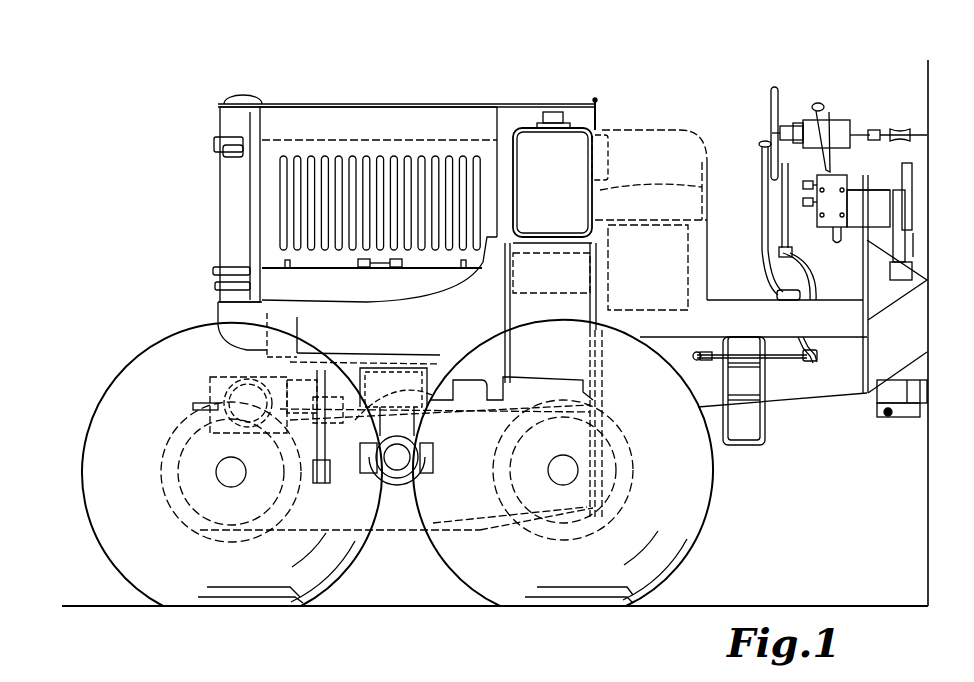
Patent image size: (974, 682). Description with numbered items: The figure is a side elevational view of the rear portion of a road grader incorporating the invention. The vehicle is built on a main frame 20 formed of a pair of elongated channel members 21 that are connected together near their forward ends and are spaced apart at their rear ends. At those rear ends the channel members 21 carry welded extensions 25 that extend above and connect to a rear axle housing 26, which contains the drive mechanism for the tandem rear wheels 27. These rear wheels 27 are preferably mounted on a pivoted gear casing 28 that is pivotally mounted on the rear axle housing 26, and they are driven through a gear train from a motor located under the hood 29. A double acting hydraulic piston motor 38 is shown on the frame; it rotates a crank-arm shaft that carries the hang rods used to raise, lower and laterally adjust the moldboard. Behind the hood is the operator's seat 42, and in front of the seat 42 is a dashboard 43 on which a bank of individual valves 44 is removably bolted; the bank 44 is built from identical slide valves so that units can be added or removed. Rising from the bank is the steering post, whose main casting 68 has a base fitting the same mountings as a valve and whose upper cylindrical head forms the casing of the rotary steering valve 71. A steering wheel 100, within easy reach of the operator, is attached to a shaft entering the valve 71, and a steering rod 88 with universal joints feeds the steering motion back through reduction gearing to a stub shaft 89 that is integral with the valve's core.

The main frame 20 is at (893, 352).
The channel members 21 is at (897, 280).
The extensions 25 is at (813, 387).
The rear axle housing 26 is at (408, 522).
The tandem rear wheels 27 is at (315, 567).
The pivoted gear casing 28 is at (377, 530).
The hood 29 is at (445, 120).
The double acting hydraulic piston motor 38 is at (907, 407).
The operator's seat 42 is at (643, 183).
The dashboard 43 is at (863, 237).
The bank of individual valves 44 is at (827, 220).
The post casting 68 is at (843, 153).
The rotary steering valve 71 is at (835, 118).
The steering rod 88 is at (917, 132).
The stub shaft 89 is at (865, 130).
The steering wheel 100 is at (772, 88).